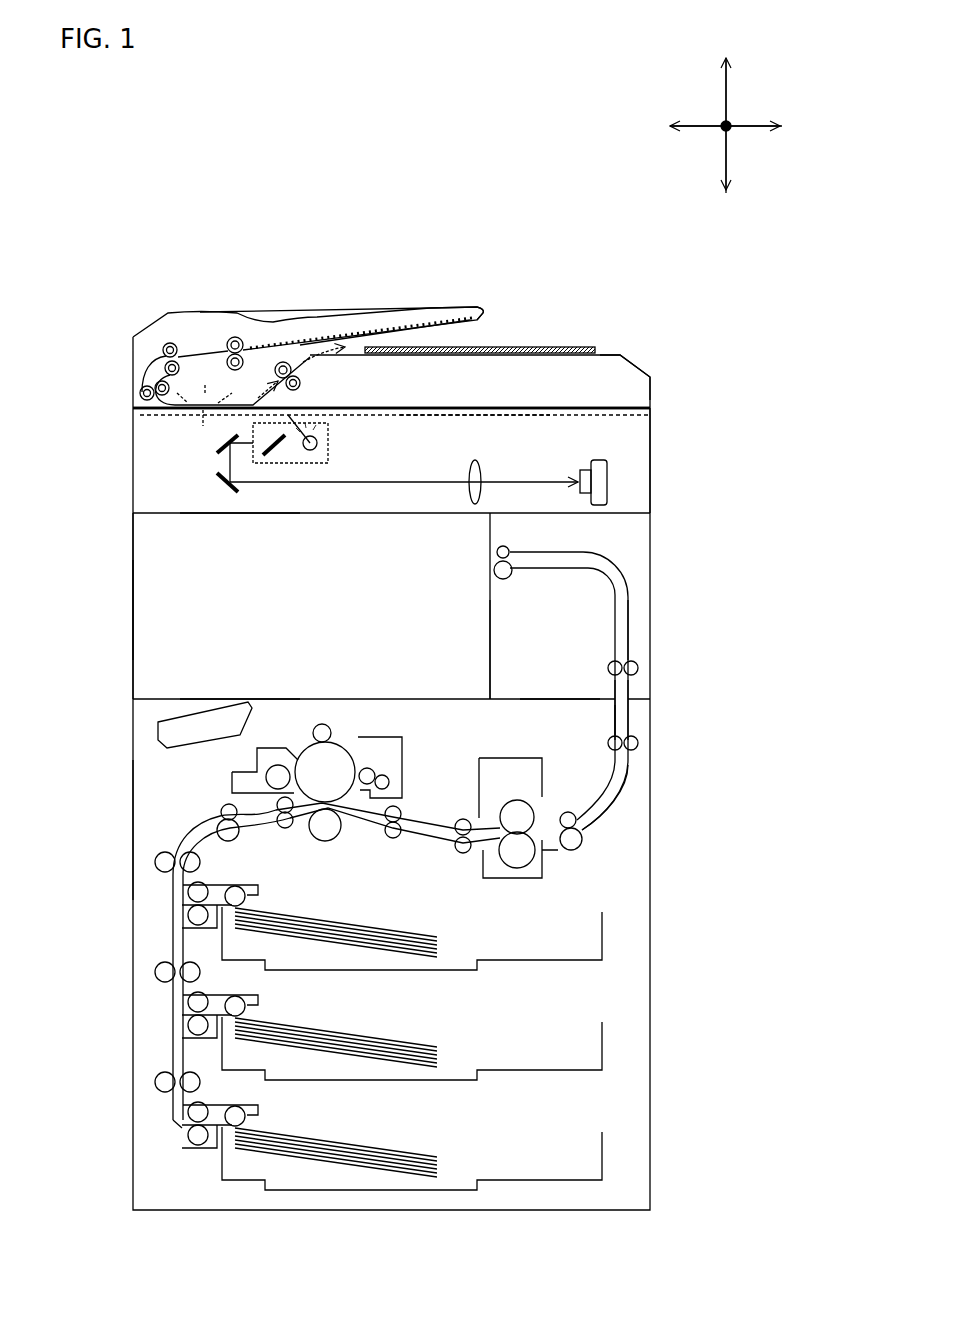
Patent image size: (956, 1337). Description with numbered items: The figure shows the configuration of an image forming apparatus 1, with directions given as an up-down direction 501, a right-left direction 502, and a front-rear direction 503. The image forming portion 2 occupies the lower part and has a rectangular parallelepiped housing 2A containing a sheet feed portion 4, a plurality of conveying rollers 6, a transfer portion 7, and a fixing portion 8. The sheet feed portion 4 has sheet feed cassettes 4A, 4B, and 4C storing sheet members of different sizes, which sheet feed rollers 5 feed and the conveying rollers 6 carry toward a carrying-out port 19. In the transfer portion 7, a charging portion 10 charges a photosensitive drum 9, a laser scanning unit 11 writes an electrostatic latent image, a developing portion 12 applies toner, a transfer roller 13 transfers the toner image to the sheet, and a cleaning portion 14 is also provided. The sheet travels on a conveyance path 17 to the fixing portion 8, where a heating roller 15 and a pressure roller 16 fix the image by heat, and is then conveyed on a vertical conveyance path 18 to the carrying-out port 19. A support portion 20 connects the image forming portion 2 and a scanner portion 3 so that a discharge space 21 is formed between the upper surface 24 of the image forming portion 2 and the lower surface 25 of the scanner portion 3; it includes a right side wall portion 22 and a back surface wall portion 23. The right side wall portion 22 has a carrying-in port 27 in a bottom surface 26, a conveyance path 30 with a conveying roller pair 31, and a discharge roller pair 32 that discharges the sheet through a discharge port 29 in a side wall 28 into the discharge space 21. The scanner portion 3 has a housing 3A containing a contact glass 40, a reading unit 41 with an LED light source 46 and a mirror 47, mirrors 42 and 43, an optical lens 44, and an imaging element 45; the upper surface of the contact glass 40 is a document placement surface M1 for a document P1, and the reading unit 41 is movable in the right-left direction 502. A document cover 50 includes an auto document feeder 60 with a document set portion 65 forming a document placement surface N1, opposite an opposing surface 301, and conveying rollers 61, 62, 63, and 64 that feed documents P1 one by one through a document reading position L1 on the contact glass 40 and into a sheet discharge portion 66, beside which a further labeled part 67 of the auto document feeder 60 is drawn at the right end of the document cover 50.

The image forming apparatus 1 is at (252, 208).
The image forming portion 2 is at (92, 745).
The housing 2A is at (132, 826).
The scanner portion 3 is at (752, 434).
The housing 3A is at (652, 458).
The sheet feed portion 4 is at (628, 936).
The sheet feed cassette 4A is at (556, 961).
The sheet feed cassette 4B is at (556, 1071).
The sheet feed cassette 4C is at (551, 1191).
The sheet feed rollers 5 is at (264, 890).
The conveying rollers 6 is at (222, 810).
The transfer portion 7 is at (347, 838).
The fixing portion 8 is at (483, 752).
The photosensitive drum 9 is at (347, 752).
The charging portion 10 is at (325, 722).
The laser scanning unit 11 is at (196, 710).
The developing portion 12 is at (272, 748).
The transfer roller 13 is at (331, 842).
The cleaning portion 14 is at (405, 766).
The heating roller 15 is at (533, 798).
The pressure roller 16 is at (517, 869).
The conveyance path 17 is at (422, 852).
The conveyance path 18 is at (626, 805).
The carrying-out port 19 is at (612, 692).
The support portion 20 is at (130, 562).
The discharge space 21 is at (285, 611).
The right side wall portion 22 is at (652, 582).
The back surface wall portion 23 is at (132, 608).
The upper surface 24 is at (241, 698).
The lower surface 25 is at (222, 516).
The bottom surface 26 is at (566, 700).
The carrying-in port 27 is at (632, 706).
The side wall 28 is at (486, 698).
The discharge port 29 is at (488, 565).
The conveyance path 30 is at (636, 608).
The conveying roller pair 31 is at (642, 663).
The discharge roller pair 32 is at (514, 574).
The contact glass 40 is at (652, 416).
The reading unit 41 is at (330, 438).
The mirror 42 is at (215, 450).
The mirror 43 is at (215, 480).
The optical lens 44 is at (471, 460).
The imaging element 45 is at (598, 458).
The LED light source 46 is at (328, 457).
The mirror 47 is at (284, 450).
The document cover 50 is at (652, 386).
The auto document feeder 60 is at (157, 285).
The conveying rollers 61 is at (230, 338).
The conveying rollers 62 is at (166, 343).
The conveying rollers 63 is at (143, 385).
The conveying rollers 64 is at (302, 380).
The document set portion 65 is at (340, 300).
The sheet discharge portion 66 is at (475, 362).
The document discharge tray 67 is at (485, 308).
The opposing surface 301 is at (477, 413).
The up-down direction 501 is at (722, 95).
The right-left direction 502 is at (708, 122).
The front-rear direction 503 is at (740, 132).
The document reading position L1 is at (223, 446).
The document placement surface M1 is at (553, 410).
The document placement surface N1 is at (432, 320).
The document P1 is at (300, 344).